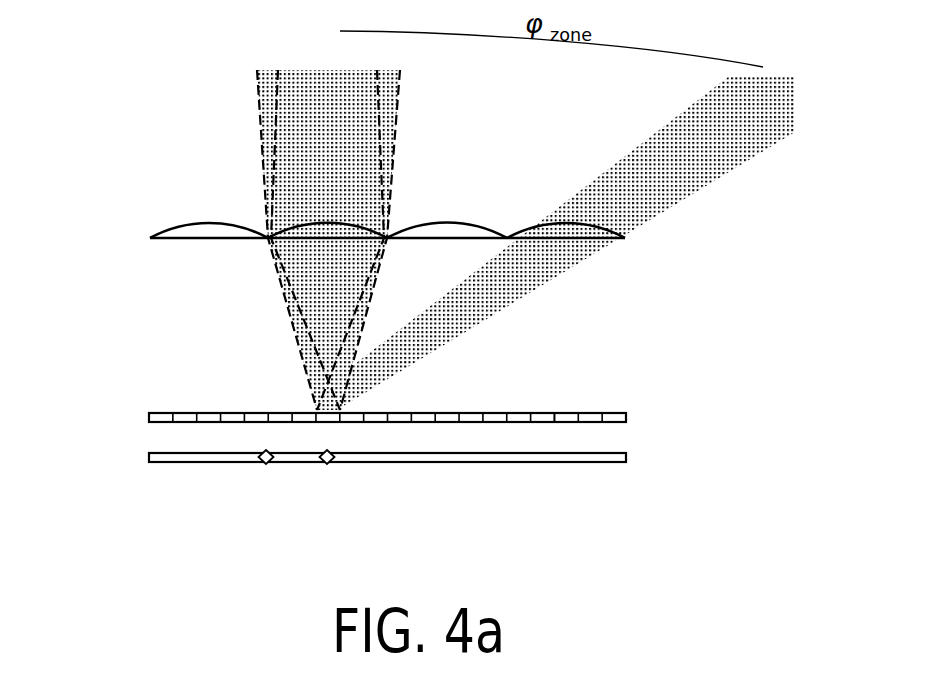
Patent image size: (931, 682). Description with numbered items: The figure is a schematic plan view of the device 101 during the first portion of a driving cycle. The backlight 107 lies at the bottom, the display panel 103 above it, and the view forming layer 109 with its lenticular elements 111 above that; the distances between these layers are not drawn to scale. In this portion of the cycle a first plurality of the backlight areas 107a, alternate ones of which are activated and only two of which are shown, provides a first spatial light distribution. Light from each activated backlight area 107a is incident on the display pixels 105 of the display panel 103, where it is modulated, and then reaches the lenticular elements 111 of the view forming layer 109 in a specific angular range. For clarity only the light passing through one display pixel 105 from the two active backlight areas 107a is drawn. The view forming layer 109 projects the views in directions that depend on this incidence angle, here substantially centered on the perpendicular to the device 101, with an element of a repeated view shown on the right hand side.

The device 101 is at (140, 105).
The display panel 103 is at (353, 393).
The display pixel 105 is at (542, 412).
The backlight 107 is at (423, 478).
The backlight areas 107a is at (266, 465).
The view forming layer 109 is at (346, 205).
The lenticular elements 111 is at (458, 230).